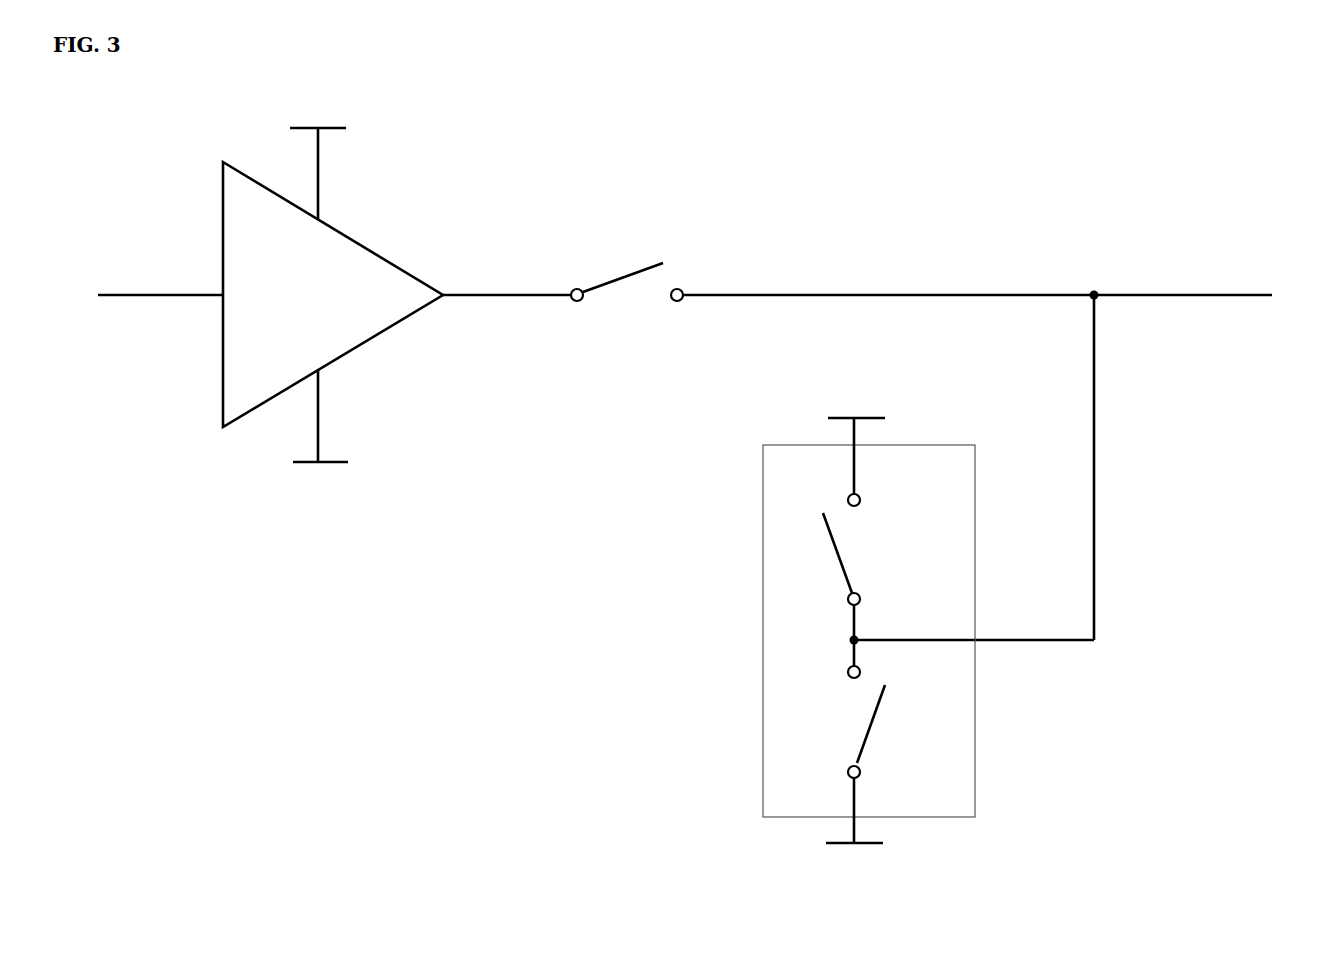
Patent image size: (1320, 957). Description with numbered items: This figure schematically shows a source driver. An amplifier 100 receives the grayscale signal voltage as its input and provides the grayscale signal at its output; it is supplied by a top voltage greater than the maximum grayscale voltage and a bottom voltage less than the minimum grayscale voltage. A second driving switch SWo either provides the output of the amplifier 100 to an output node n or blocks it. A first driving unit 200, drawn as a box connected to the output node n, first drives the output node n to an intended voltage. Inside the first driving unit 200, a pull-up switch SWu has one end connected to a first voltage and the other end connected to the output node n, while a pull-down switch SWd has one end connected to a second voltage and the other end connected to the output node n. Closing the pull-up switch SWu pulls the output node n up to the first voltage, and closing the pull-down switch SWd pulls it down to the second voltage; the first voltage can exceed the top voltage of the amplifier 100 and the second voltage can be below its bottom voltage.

The amplifier 100 is at (385, 332).
The first driving unit 200 is at (815, 632).
The output node n is at (1092, 290).
The second driving switch SWo is at (627, 308).
The pull-up switch SWu is at (876, 549).
The pull-down switch SWd is at (905, 722).